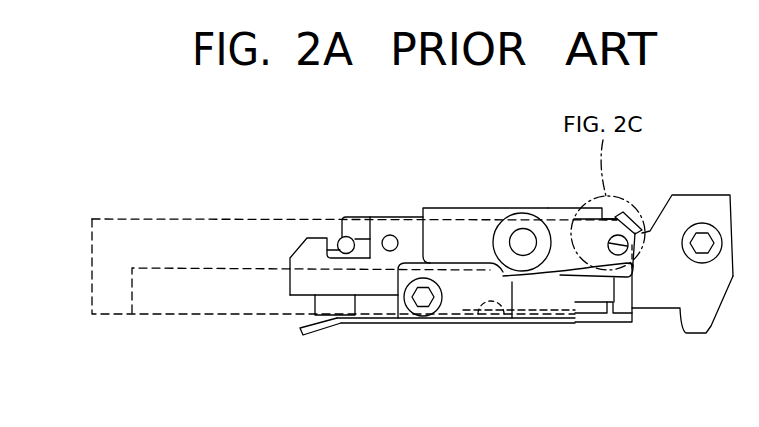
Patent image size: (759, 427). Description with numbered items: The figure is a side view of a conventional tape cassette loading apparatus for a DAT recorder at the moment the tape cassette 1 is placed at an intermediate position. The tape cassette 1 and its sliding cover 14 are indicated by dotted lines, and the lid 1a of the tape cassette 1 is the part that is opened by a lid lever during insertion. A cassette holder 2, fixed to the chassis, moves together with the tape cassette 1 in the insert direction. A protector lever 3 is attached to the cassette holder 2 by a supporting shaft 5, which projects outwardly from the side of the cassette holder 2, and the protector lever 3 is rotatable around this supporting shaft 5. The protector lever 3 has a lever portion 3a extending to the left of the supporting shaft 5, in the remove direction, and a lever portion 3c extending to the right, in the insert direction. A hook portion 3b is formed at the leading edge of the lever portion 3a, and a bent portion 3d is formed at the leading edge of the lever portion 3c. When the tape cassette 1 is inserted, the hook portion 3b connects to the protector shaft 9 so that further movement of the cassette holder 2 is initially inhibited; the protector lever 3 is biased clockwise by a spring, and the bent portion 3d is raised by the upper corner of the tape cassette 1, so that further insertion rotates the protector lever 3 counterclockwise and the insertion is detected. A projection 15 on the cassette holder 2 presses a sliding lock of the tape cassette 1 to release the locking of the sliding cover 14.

The tape cassette 1 is at (129, 218).
The lid 1a is at (635, 298).
The cassette holder 2 is at (693, 195).
The protector lever 3 is at (479, 207).
The lever portion 3a is at (313, 282).
The hook portion 3b is at (317, 247).
The lever portion 3c is at (568, 255).
The bent portion 3d is at (637, 215).
The supporting shaft 5 is at (523, 240).
The protector shaft 9 is at (357, 221).
The sliding cover 14 is at (191, 268).
The projection 15 is at (508, 312).